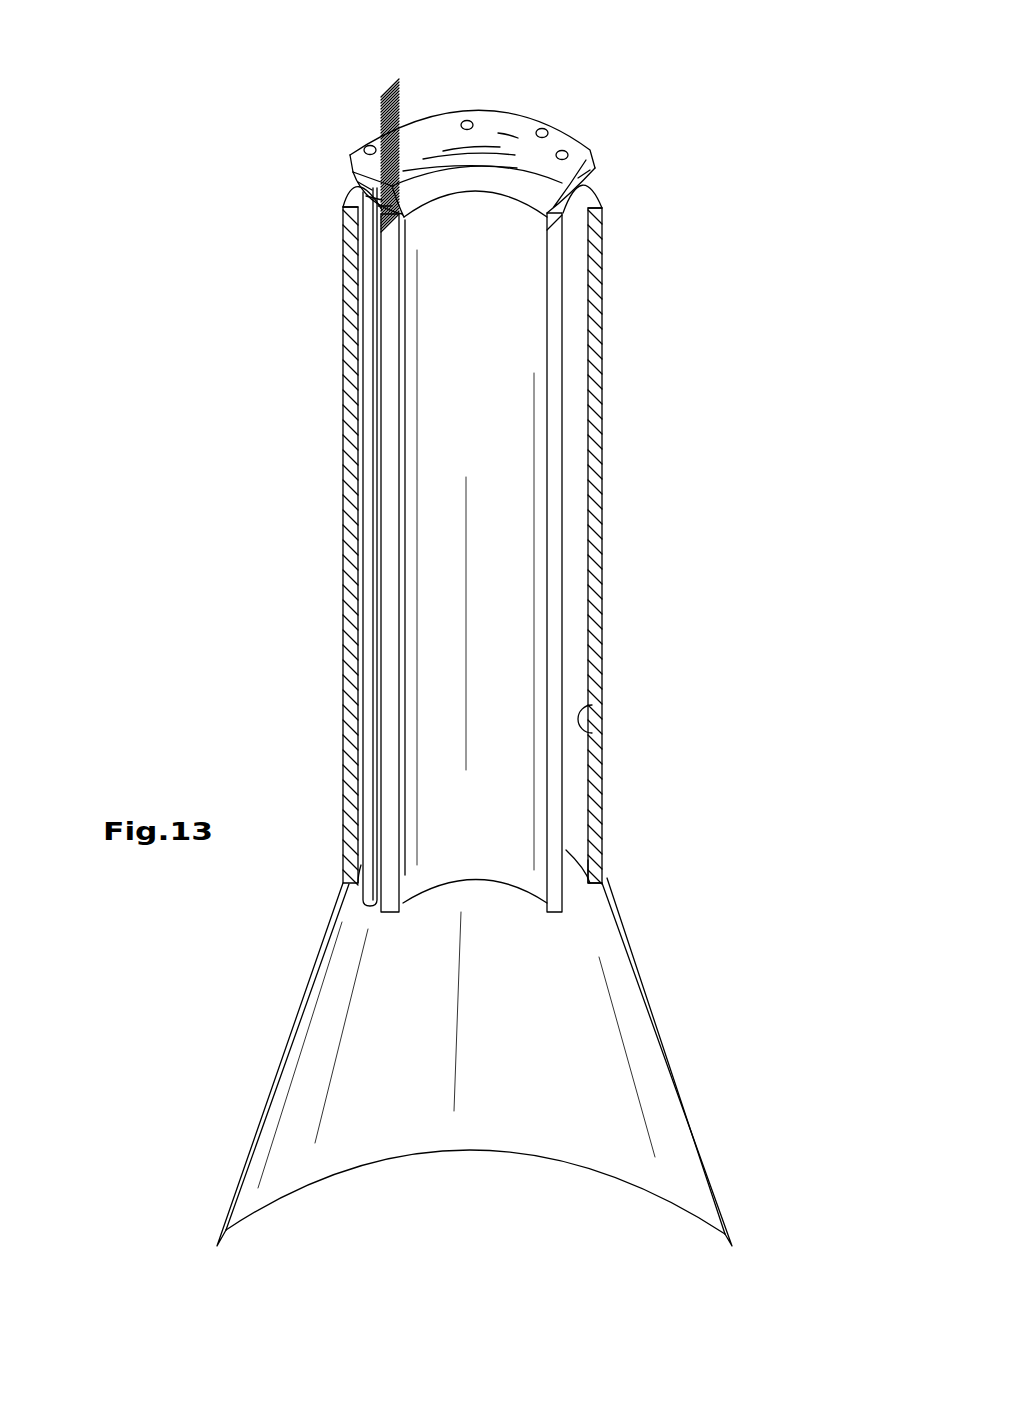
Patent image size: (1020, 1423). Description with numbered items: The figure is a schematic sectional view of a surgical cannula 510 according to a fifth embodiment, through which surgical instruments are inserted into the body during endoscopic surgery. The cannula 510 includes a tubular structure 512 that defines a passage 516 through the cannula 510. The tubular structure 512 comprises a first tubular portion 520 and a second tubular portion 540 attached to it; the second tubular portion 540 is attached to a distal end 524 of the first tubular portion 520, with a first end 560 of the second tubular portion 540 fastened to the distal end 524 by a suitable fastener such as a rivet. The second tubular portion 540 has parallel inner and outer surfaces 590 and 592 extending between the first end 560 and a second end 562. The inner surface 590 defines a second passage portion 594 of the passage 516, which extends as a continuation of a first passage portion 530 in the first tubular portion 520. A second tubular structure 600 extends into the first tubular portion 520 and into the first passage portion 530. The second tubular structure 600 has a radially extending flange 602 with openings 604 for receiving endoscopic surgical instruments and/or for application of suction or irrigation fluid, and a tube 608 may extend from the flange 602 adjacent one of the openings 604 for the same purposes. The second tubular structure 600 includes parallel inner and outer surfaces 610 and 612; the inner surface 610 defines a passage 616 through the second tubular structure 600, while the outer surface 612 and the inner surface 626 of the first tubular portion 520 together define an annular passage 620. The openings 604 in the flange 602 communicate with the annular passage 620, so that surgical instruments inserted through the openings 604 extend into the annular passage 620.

The cannula 510 is at (264, 216).
The tubular structure 512 is at (622, 782).
The passage 516 is at (580, 283).
The first tubular portion 520 is at (605, 334).
The distal end 524 is at (601, 865).
The first passage portion 530 is at (580, 638).
The second tubular portion 540 is at (676, 1051).
The first end 560 is at (605, 884).
The second end 562 is at (347, 1150).
The inner surface 590 is at (679, 1174).
The outer surface 592 is at (706, 1150).
The second passage portion 594 is at (490, 1118).
The second tubular structure 600 is at (554, 493).
The radially extending flange 602 is at (415, 125).
The openings 604 is at (567, 151).
The tube 608 is at (370, 512).
The inner surface 610 is at (442, 700).
The outer surface 612 is at (565, 407).
The passage 616 is at (450, 388).
The annular passage 620 is at (580, 548).
The inner surface 626 is at (594, 706).